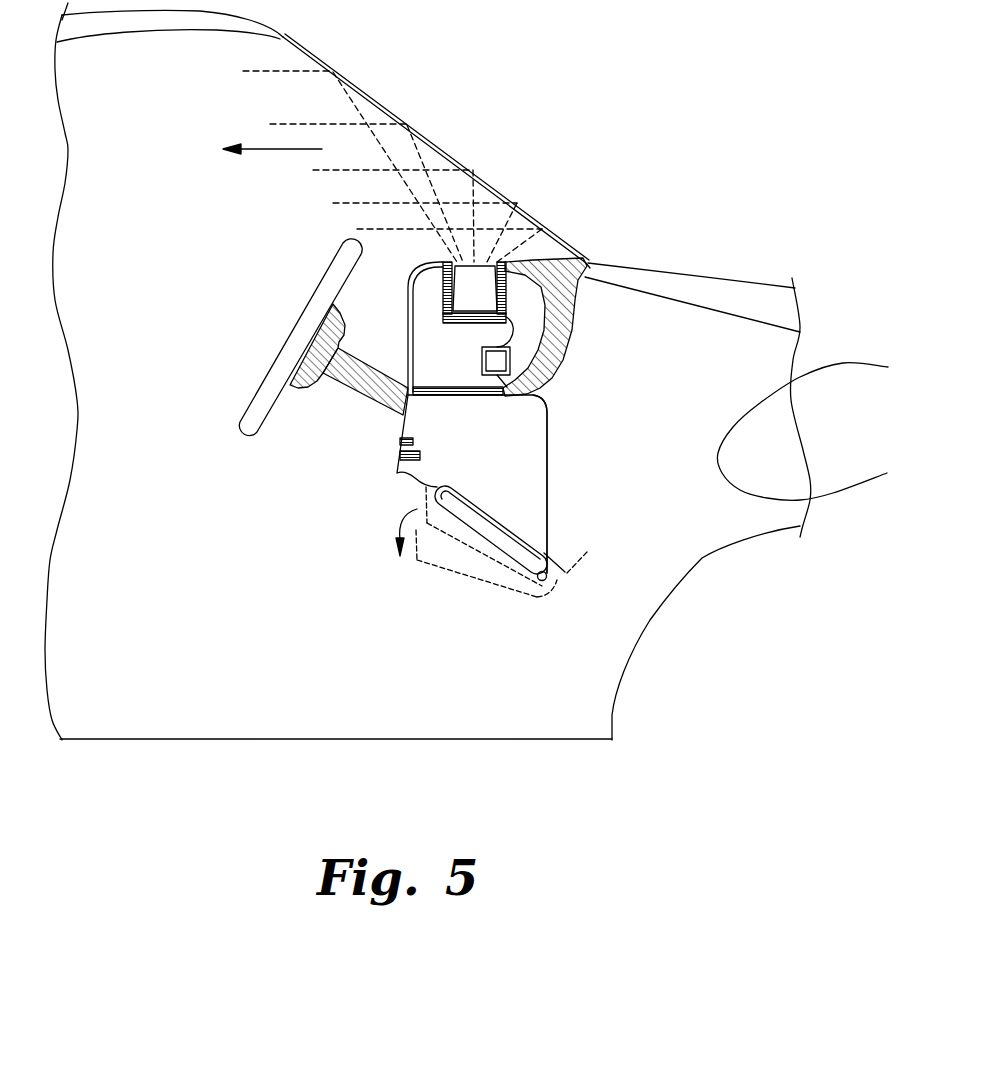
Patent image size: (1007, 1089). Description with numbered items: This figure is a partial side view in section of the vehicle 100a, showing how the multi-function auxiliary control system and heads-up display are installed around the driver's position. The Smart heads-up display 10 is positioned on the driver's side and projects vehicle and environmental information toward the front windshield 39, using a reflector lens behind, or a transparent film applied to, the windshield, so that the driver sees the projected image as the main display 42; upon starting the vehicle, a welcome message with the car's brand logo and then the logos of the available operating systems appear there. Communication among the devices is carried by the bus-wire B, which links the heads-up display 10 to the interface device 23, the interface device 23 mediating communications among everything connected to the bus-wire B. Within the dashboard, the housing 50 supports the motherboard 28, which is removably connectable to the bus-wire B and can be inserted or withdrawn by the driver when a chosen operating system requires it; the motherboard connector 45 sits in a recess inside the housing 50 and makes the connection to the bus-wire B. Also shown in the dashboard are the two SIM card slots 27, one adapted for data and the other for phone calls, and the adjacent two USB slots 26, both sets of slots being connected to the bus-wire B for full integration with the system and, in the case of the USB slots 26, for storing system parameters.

The heads-up display 10 is at (491, 299).
The interface device 23 is at (482, 358).
The USB slots 26 is at (413, 440).
The SIM card slots 27 is at (421, 455).
The motherboard 28 is at (450, 496).
The front windshield 39 is at (440, 147).
The main display 42 is at (281, 151).
The motherboard connector 45 is at (556, 583).
The housing 50 is at (448, 572).
The vehicle 100a is at (297, 737).
The bus-wire B is at (550, 430).